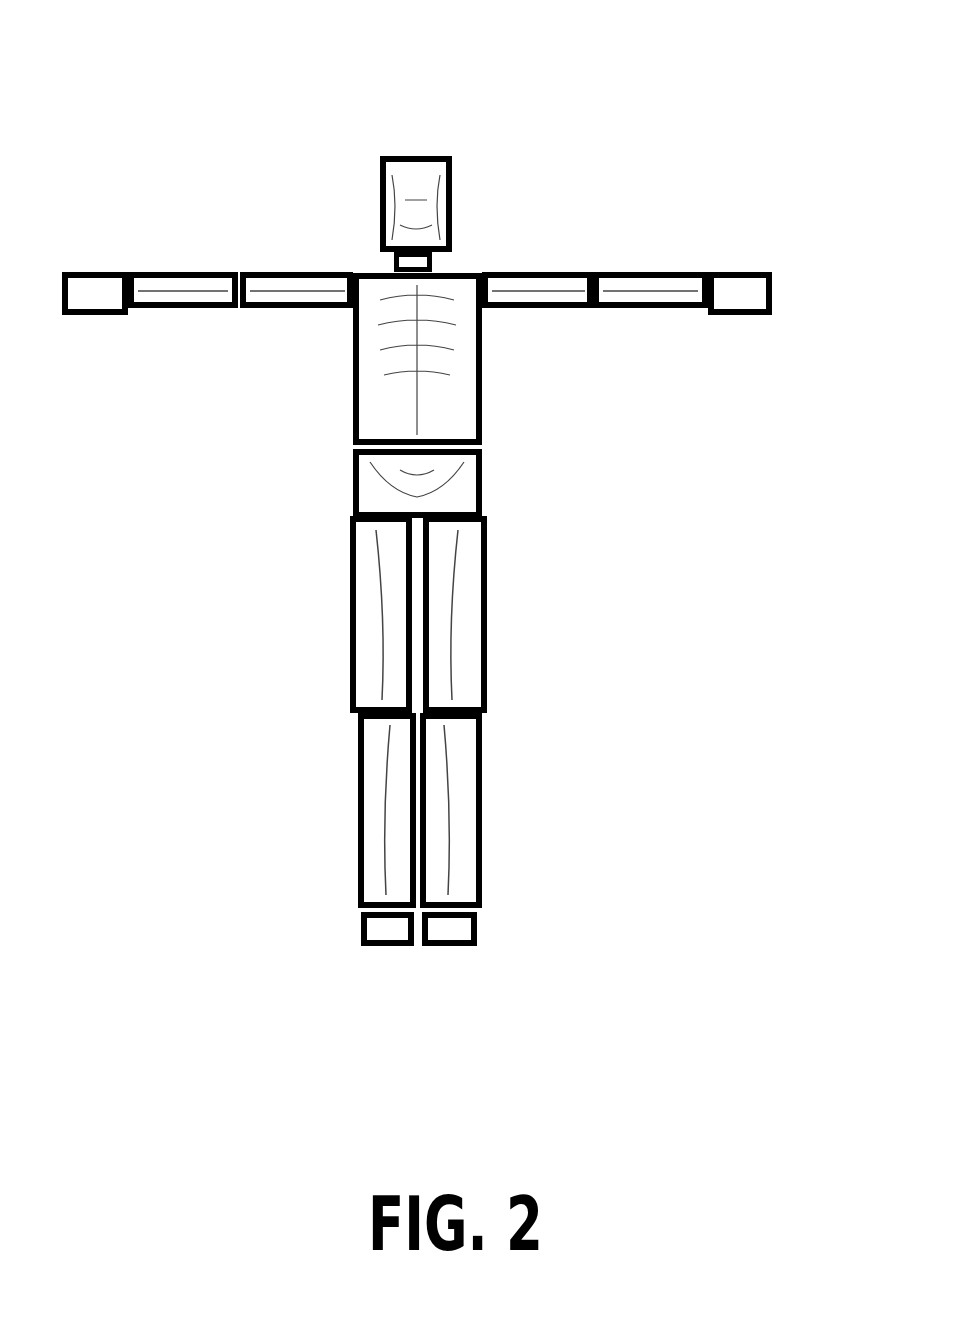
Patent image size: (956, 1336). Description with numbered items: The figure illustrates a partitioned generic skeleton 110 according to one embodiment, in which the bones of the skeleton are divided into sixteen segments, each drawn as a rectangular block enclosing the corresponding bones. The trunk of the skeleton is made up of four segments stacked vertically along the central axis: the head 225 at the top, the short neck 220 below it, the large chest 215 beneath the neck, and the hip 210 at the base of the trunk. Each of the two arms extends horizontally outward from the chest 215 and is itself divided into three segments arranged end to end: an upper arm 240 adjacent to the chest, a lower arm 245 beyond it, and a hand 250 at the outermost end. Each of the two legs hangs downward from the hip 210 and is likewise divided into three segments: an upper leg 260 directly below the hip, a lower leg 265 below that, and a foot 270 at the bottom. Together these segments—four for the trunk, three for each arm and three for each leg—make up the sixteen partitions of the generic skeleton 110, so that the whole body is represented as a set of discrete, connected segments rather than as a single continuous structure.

The generic skeleton 110 is at (421, 522).
The head 225 is at (453, 190).
The neck 220 is at (432, 262).
The chest 215 is at (482, 403).
The hip 210 is at (482, 487).
The upper arm 240 is at (293, 310).
The lower arm 245 is at (183, 270).
The hand 250 is at (98, 318).
The upper leg 260 is at (350, 585).
The lower leg 265 is at (358, 775).
The foot 270 is at (402, 946).